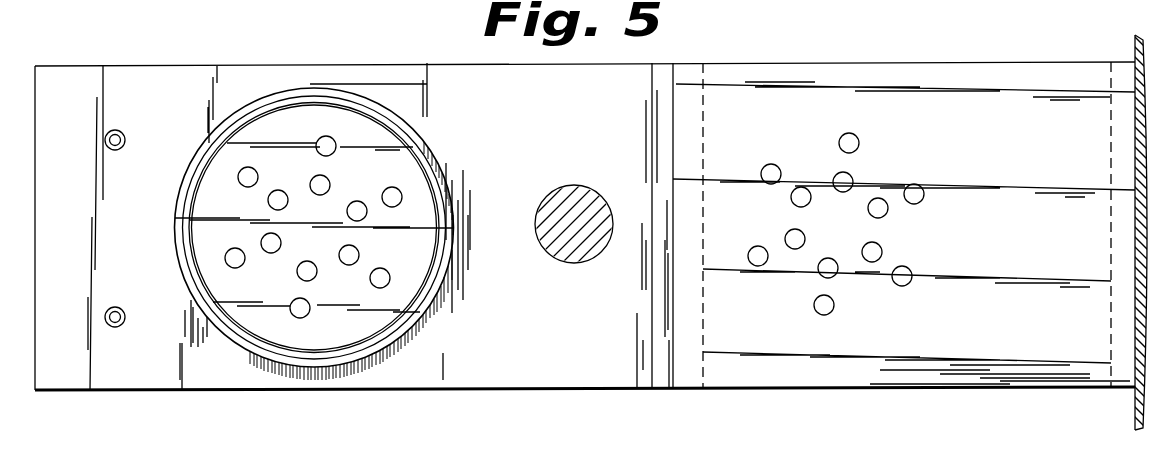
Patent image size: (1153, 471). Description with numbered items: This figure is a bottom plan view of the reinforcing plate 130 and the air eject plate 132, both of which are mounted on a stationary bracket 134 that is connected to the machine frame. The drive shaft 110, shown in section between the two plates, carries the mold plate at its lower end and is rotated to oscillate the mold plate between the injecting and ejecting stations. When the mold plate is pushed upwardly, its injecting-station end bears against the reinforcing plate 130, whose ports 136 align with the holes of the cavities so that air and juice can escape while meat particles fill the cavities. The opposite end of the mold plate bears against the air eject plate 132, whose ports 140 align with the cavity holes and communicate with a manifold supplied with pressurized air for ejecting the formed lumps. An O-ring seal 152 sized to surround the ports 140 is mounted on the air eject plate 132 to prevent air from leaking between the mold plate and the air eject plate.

The drive shaft 110 is at (557, 263).
The reinforcing plate 130 is at (832, 368).
The air eject plate 132 is at (381, 364).
The stationary bracket 134 is at (598, 375).
The ports 136 is at (905, 272).
The ports 140 is at (392, 197).
The O-ring seal 152 is at (228, 325).